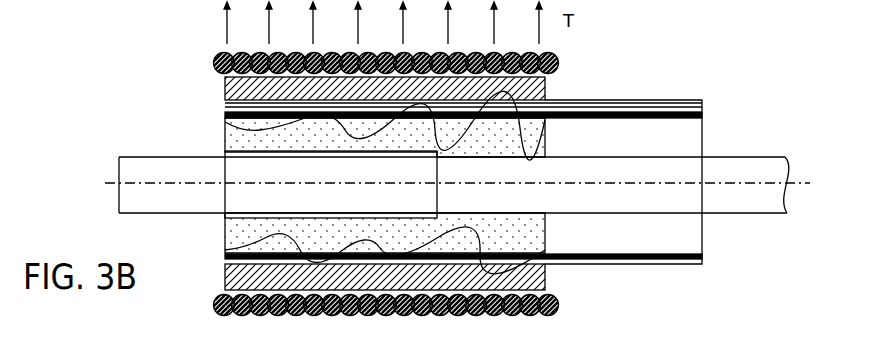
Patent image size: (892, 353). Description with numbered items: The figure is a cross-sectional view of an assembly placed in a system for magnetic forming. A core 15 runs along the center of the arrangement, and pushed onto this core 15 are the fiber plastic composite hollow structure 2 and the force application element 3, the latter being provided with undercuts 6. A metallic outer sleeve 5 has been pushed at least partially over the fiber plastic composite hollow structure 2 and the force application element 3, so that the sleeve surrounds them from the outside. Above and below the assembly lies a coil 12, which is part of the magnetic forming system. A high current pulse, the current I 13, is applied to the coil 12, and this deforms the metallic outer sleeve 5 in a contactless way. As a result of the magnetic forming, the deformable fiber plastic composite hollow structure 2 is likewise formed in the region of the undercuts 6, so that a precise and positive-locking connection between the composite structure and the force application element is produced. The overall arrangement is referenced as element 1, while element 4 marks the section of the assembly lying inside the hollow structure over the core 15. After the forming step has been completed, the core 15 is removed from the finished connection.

The tubular body 1 is at (720, 133).
The fiber plastic composite hollow structure 2 is at (676, 108).
The force application element 3 is at (505, 130).
The sleeve section 4 is at (310, 150).
The metallic outer sleeve 5 is at (235, 88).
The undercuts 6 is at (243, 242).
The coil 12 is at (528, 311).
The current I 13 is at (594, 302).
The core 15 is at (747, 167).